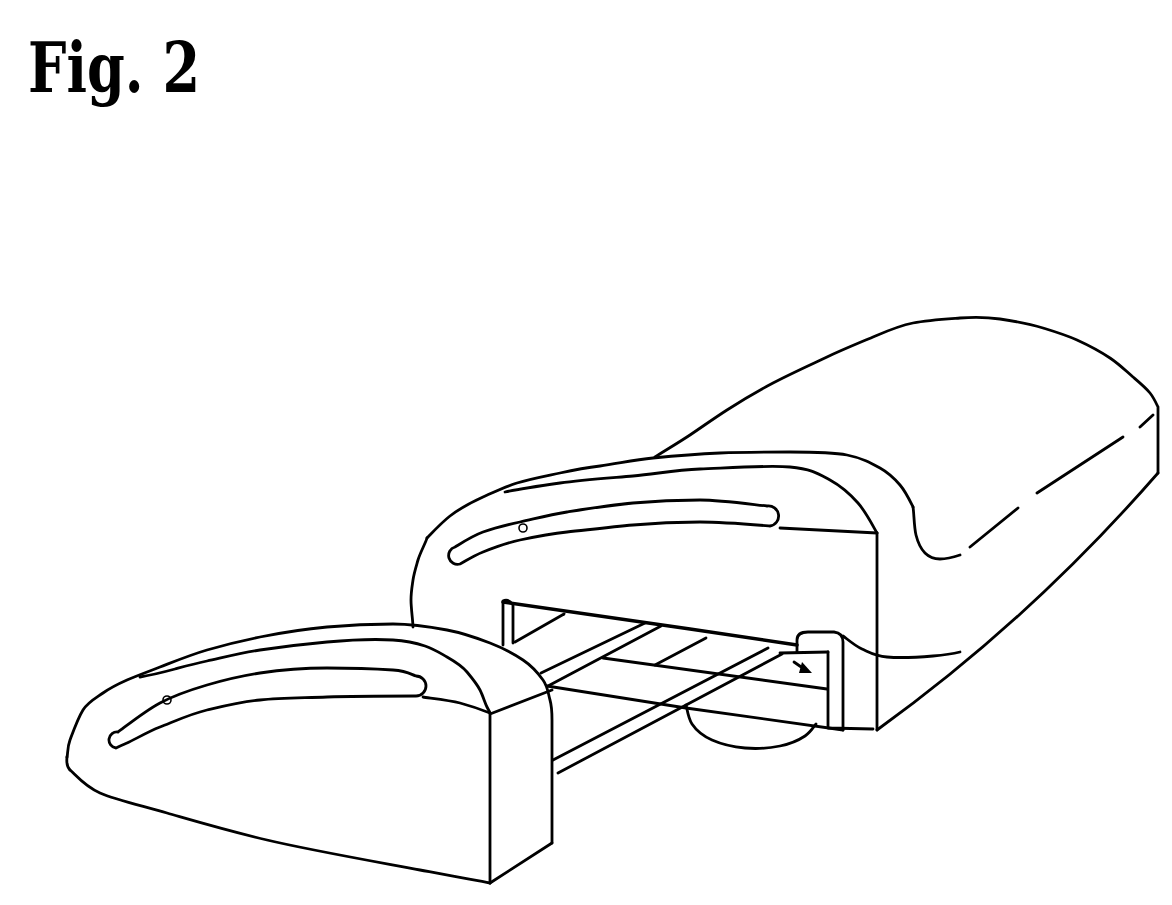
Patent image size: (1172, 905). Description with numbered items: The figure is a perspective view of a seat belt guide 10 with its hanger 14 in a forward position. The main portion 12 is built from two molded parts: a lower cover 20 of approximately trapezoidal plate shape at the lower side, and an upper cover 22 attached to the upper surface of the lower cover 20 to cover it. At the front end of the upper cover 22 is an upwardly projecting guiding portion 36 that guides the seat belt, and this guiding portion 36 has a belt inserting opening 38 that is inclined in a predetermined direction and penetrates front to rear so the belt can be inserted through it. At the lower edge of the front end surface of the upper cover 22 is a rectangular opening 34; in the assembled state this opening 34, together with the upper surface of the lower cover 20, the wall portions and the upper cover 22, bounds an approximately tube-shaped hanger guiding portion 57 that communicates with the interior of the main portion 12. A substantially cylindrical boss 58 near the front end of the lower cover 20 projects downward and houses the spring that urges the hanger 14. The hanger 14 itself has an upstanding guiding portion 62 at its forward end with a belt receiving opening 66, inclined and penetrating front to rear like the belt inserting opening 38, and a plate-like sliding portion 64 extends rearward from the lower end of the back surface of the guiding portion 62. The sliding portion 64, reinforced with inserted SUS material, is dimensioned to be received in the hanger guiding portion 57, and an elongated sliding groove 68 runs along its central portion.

The seat belt guide 10 is at (414, 322).
The main portion 12 is at (1046, 693).
The hanger 14 is at (284, 618).
The lower cover 20 is at (843, 730).
The upper cover 22 is at (928, 668).
The rectangular opening 34 is at (510, 634).
The guiding portion 36 is at (643, 460).
The belt inserting opening 38 is at (520, 528).
The hanger guiding portion 57 is at (960, 652).
The boss 58 is at (777, 735).
The guiding portion 62 is at (240, 637).
The sliding portion 64 is at (592, 720).
The belt receiving opening 66 is at (167, 702).
The sliding groove 68 is at (608, 680).